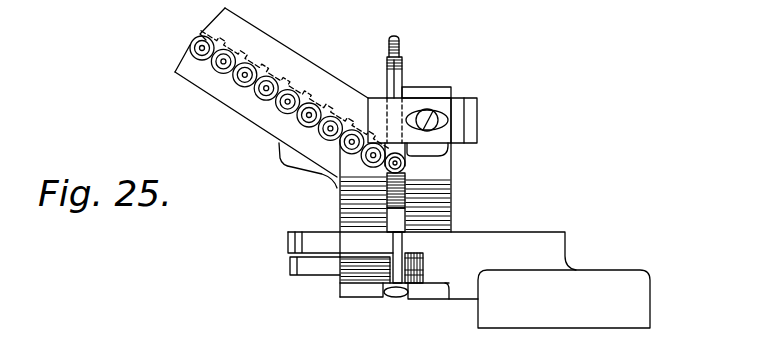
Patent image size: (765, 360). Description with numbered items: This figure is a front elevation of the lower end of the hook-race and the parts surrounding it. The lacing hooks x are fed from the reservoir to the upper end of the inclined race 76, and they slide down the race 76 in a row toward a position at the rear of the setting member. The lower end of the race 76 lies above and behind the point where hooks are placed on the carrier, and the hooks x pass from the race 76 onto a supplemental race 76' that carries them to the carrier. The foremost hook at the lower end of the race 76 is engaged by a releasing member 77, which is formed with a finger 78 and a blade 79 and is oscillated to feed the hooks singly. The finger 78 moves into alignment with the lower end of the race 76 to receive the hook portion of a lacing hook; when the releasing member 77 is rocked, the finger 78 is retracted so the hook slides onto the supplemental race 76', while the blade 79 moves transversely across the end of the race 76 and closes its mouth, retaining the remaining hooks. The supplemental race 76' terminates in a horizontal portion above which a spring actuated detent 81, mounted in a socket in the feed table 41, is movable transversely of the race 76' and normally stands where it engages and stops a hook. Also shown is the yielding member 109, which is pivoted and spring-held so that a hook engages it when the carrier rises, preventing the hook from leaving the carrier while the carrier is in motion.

The race 76 is at (281, 92).
The supplemental race 76' is at (386, 210).
The releasing member 77 is at (402, 63).
The finger 78 is at (405, 186).
The blade 79 is at (395, 36).
The spring actuated detent 81 is at (408, 253).
The yielding member 109 is at (393, 242).
The feed table 41 is at (515, 237).
The lacing hooks x is at (195, 42).